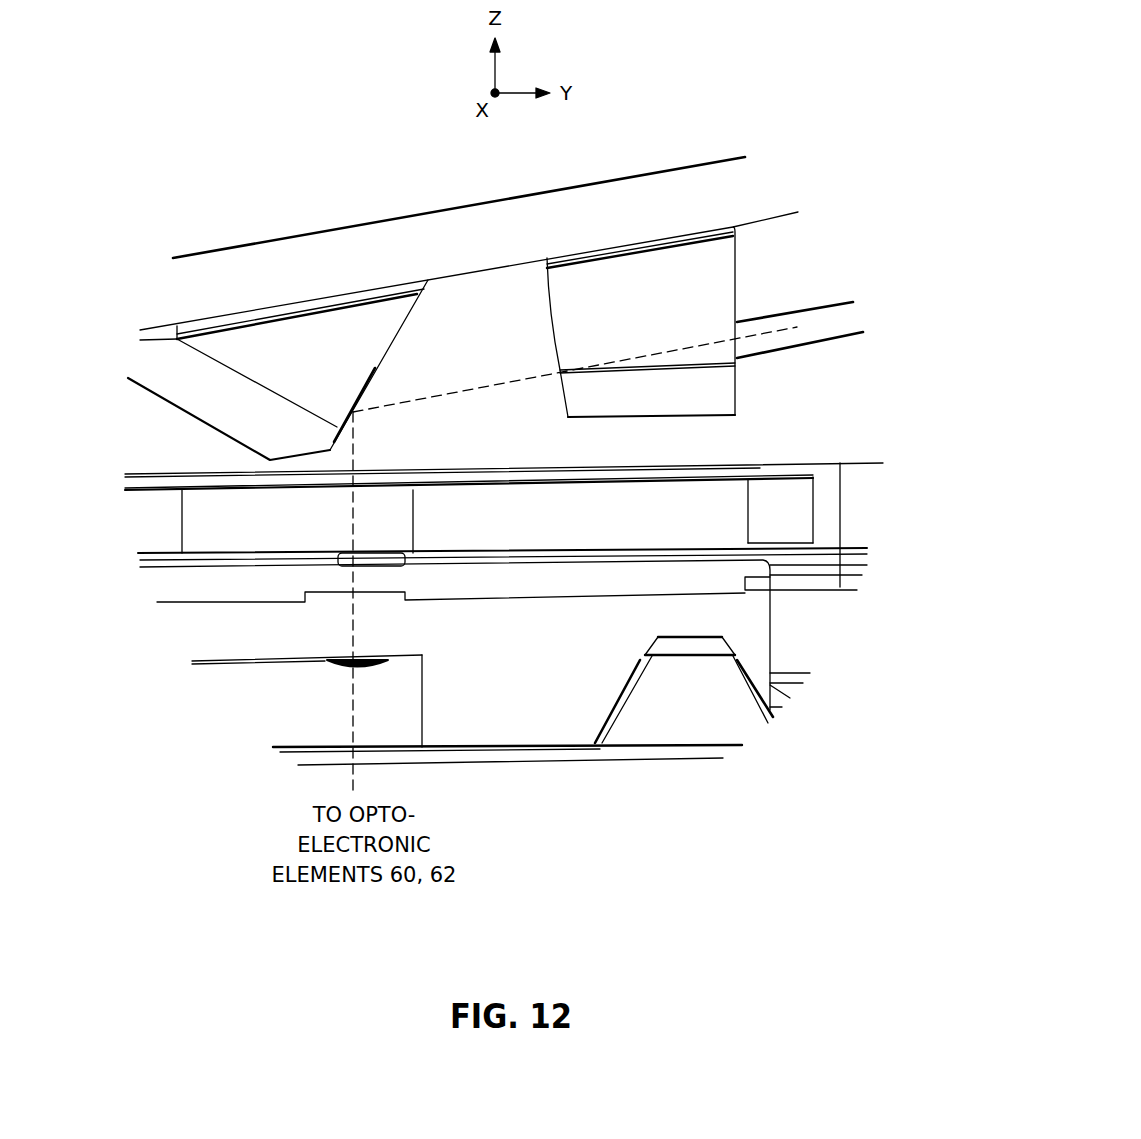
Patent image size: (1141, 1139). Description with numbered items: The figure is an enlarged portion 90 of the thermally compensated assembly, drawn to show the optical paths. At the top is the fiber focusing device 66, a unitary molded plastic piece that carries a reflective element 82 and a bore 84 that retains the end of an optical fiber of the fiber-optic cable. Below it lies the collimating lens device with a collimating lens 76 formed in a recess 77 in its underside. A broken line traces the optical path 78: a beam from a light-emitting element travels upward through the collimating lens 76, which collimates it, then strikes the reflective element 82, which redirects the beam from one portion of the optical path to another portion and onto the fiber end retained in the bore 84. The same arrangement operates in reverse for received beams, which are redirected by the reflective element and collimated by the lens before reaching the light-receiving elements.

The enlarged portion 90 is at (752, 60).
The fiber focusing device 66 is at (383, 220).
The reflective element 82 is at (373, 380).
The optical path 78 is at (575, 558).
The bore 84 is at (827, 303).
The recess 77 is at (242, 698).
The collimating lens 76 is at (353, 670).